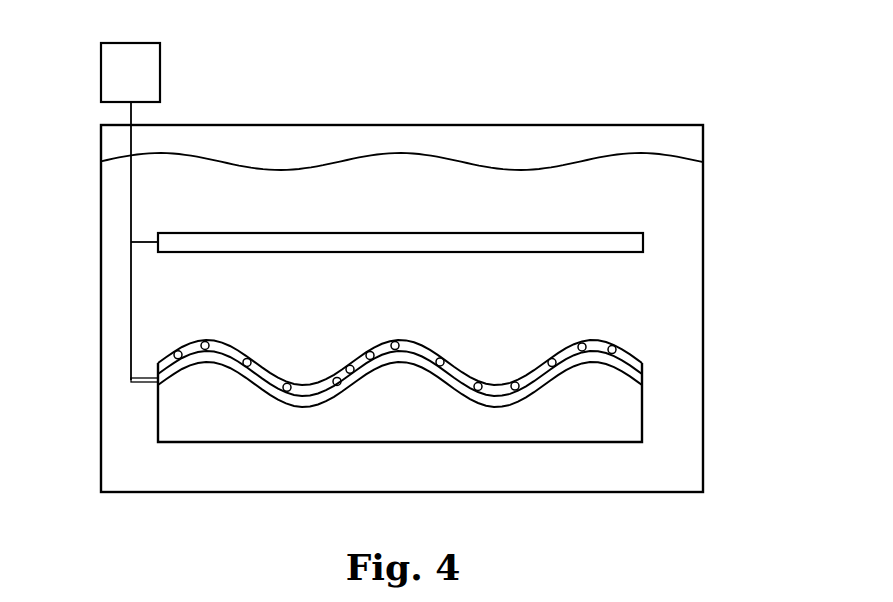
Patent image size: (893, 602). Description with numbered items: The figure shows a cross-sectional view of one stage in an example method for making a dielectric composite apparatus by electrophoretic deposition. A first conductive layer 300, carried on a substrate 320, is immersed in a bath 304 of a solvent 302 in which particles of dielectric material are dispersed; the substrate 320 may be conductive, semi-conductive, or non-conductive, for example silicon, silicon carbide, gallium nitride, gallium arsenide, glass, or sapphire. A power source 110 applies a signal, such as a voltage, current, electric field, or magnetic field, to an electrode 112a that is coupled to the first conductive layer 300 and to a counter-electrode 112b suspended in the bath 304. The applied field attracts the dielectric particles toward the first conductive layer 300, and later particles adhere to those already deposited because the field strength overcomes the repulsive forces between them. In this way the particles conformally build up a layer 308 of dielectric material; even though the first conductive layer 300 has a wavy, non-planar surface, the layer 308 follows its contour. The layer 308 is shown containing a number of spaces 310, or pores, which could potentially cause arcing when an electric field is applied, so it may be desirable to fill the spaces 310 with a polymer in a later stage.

The power source 110 is at (130, 72).
The bath 304 is at (703, 136).
The solvent 302 is at (688, 203).
The counter-electrode 112b is at (253, 238).
The electrode 112a is at (131, 380).
The substrate 320 is at (633, 407).
The first conductive layer 300 is at (634, 380).
The layer of dielectric material 308 is at (635, 363).
The spaces 310 is at (478, 382).